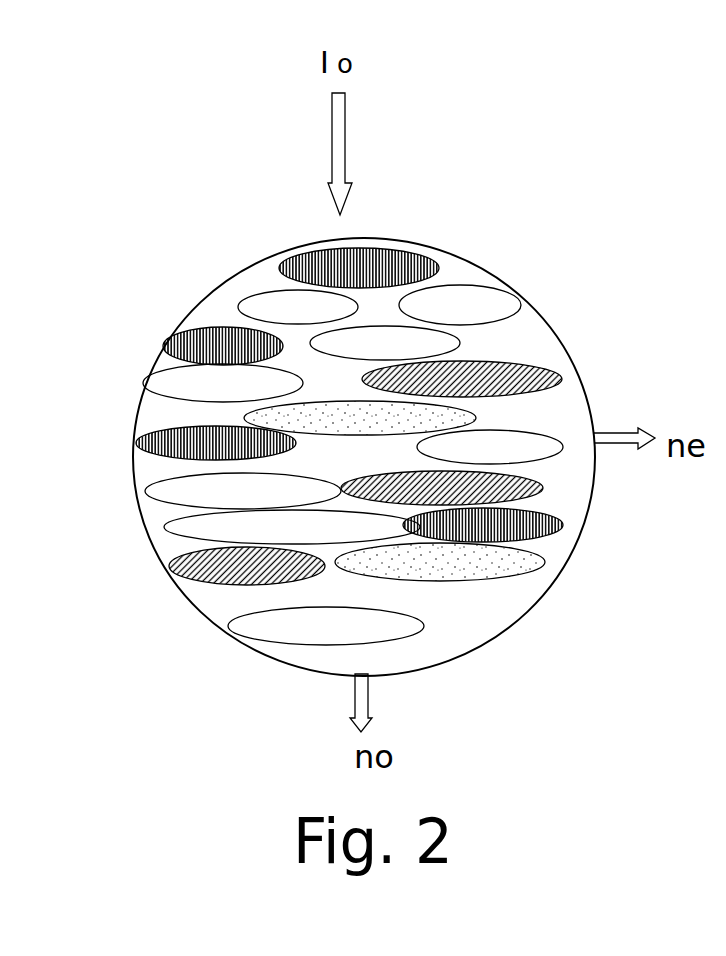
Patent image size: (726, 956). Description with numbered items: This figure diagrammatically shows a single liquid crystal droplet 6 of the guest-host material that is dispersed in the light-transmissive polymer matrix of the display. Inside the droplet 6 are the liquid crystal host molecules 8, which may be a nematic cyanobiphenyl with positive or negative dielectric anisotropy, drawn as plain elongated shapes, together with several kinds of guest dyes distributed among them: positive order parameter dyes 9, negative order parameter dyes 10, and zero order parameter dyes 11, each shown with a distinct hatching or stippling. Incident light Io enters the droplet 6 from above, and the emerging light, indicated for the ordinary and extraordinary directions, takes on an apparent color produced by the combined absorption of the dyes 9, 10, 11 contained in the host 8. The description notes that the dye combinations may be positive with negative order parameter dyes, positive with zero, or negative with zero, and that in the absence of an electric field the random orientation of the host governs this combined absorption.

The liquid crystal droplet 6 is at (533, 307).
The liquid crystal host molecules 8 is at (252, 618).
The positive order parameter dyes 9 is at (453, 573).
The negative order parameter dyes 10 is at (192, 328).
The zero order parameter dyes 11 is at (505, 368).